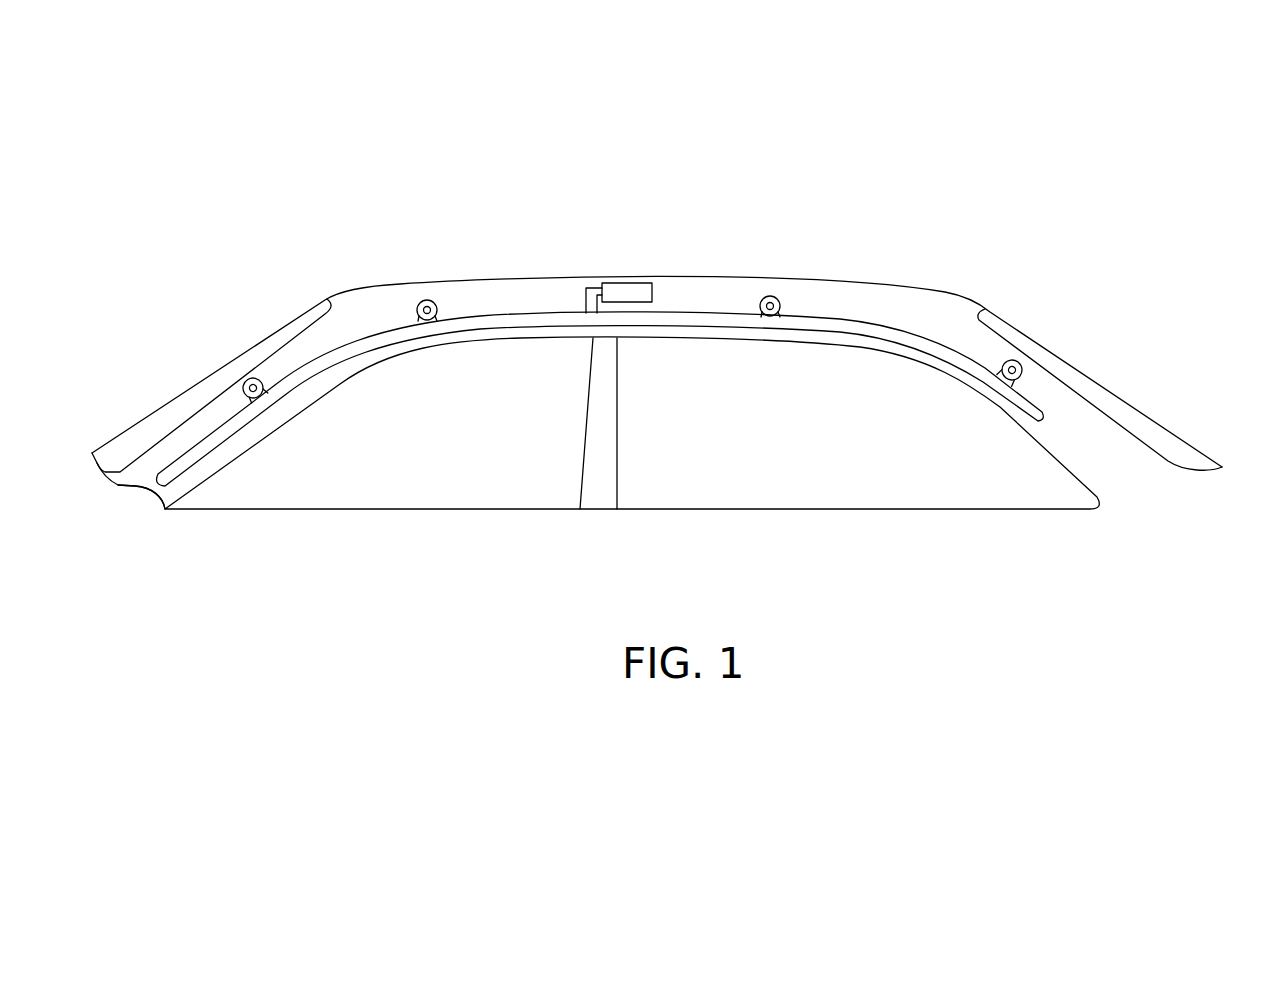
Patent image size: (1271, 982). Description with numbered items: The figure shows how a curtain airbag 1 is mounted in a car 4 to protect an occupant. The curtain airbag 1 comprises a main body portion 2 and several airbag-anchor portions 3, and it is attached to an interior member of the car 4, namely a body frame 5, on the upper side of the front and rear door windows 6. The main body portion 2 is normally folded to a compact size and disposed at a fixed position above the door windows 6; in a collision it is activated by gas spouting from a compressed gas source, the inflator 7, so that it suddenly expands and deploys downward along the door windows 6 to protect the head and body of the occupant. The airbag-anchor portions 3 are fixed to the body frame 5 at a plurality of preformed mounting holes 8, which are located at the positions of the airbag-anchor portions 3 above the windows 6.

The curtain airbag 1 is at (548, 287).
The main body portion 2 is at (187, 465).
The airbag-anchor portions 3 is at (237, 378).
The car 4 is at (910, 265).
The body frame 5 is at (134, 488).
The door windows 6 is at (433, 478).
The inflator 7 is at (634, 286).
The mounting holes 8 is at (250, 378).